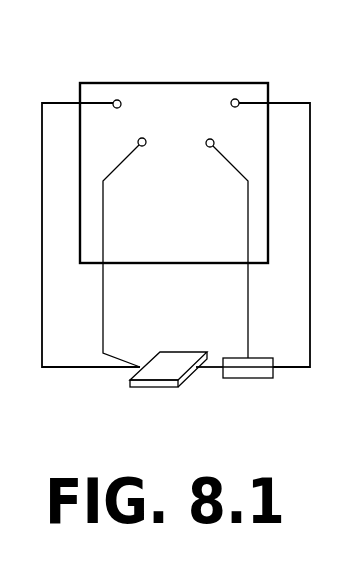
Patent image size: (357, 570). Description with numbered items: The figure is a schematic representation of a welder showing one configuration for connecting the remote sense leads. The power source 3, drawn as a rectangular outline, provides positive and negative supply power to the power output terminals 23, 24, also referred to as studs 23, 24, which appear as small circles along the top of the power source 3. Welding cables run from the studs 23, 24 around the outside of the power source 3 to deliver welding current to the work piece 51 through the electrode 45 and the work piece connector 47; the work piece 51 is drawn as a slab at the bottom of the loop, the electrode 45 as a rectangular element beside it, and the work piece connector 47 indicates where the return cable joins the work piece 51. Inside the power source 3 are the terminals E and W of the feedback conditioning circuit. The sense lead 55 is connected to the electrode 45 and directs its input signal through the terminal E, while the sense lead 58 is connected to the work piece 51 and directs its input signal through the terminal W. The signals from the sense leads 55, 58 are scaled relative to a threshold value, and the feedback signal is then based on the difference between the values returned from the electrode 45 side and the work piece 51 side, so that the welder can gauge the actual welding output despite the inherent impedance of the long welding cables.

The power source 3 is at (255, 161).
The power output terminal 23 is at (236, 98).
The power output terminal 24 is at (117, 99).
The work piece terminal W is at (142, 137).
The electrode terminal E is at (211, 138).
The electrode 45 is at (250, 379).
The work piece connector 47 is at (113, 388).
The work piece 51 is at (156, 374).
The sense lead 55 is at (248, 247).
The sense lead 58 is at (104, 226).